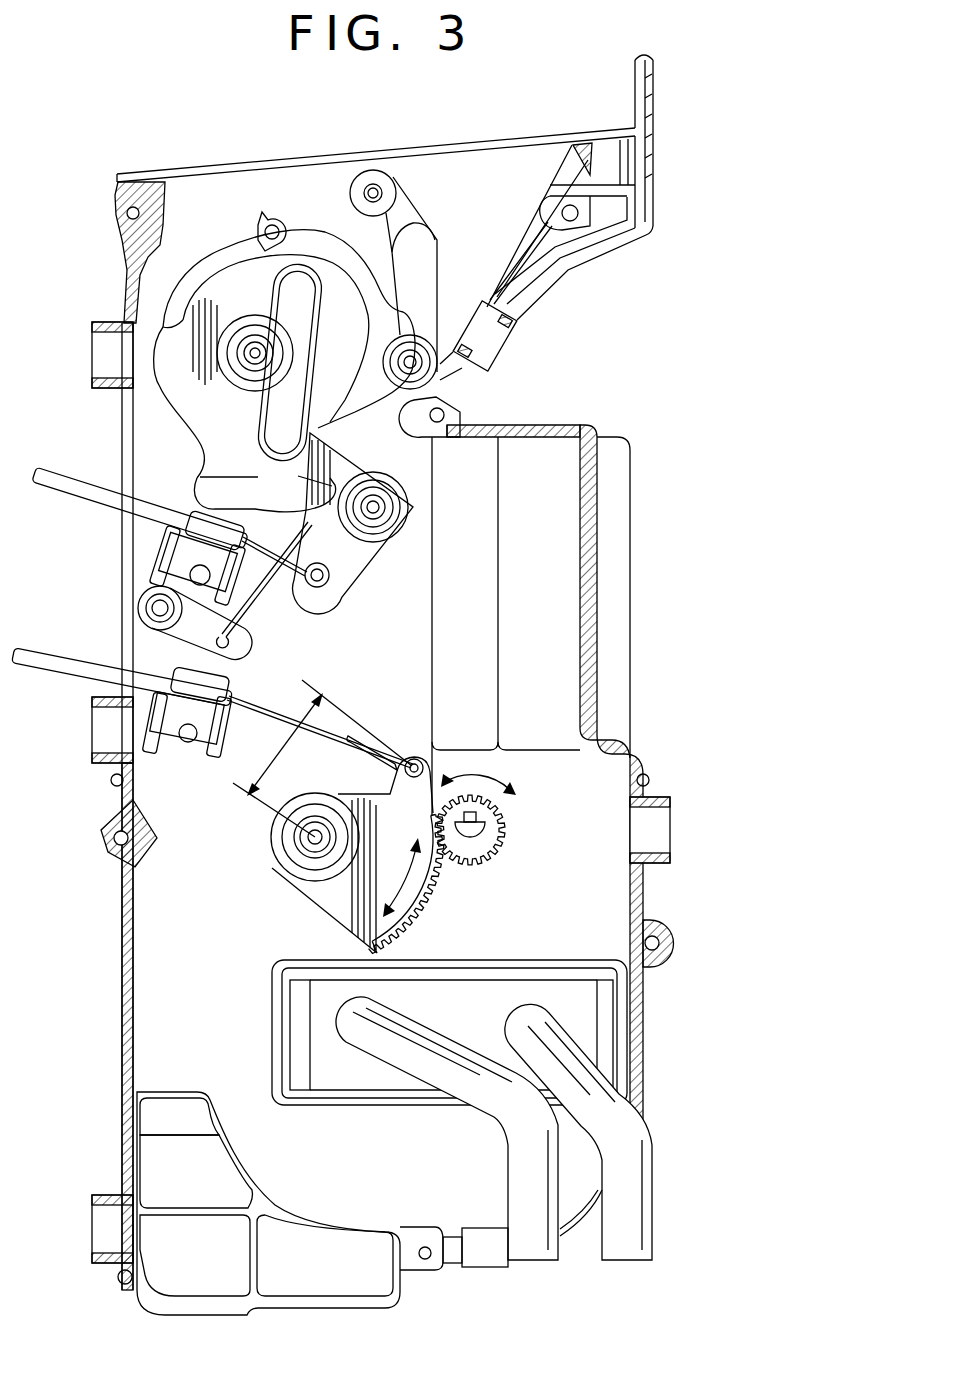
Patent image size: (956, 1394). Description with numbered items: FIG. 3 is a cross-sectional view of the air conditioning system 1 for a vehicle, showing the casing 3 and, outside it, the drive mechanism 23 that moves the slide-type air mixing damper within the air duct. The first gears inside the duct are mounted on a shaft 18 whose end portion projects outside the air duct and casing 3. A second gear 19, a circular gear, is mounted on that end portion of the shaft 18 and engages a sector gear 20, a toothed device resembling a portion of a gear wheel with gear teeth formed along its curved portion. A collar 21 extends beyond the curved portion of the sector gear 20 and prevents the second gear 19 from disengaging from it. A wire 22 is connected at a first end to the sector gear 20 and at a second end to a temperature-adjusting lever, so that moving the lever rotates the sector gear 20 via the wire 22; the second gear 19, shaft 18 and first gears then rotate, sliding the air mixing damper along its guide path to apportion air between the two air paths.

The air conditioning system 1 is at (149, 160).
The casing 3 is at (638, 520).
The shaft 18 is at (478, 840).
The second gear 19 is at (504, 815).
The sector gear 20 is at (327, 890).
The collar 21 is at (432, 914).
The wire 22 is at (266, 712).
The drive mechanism 23 is at (583, 823).